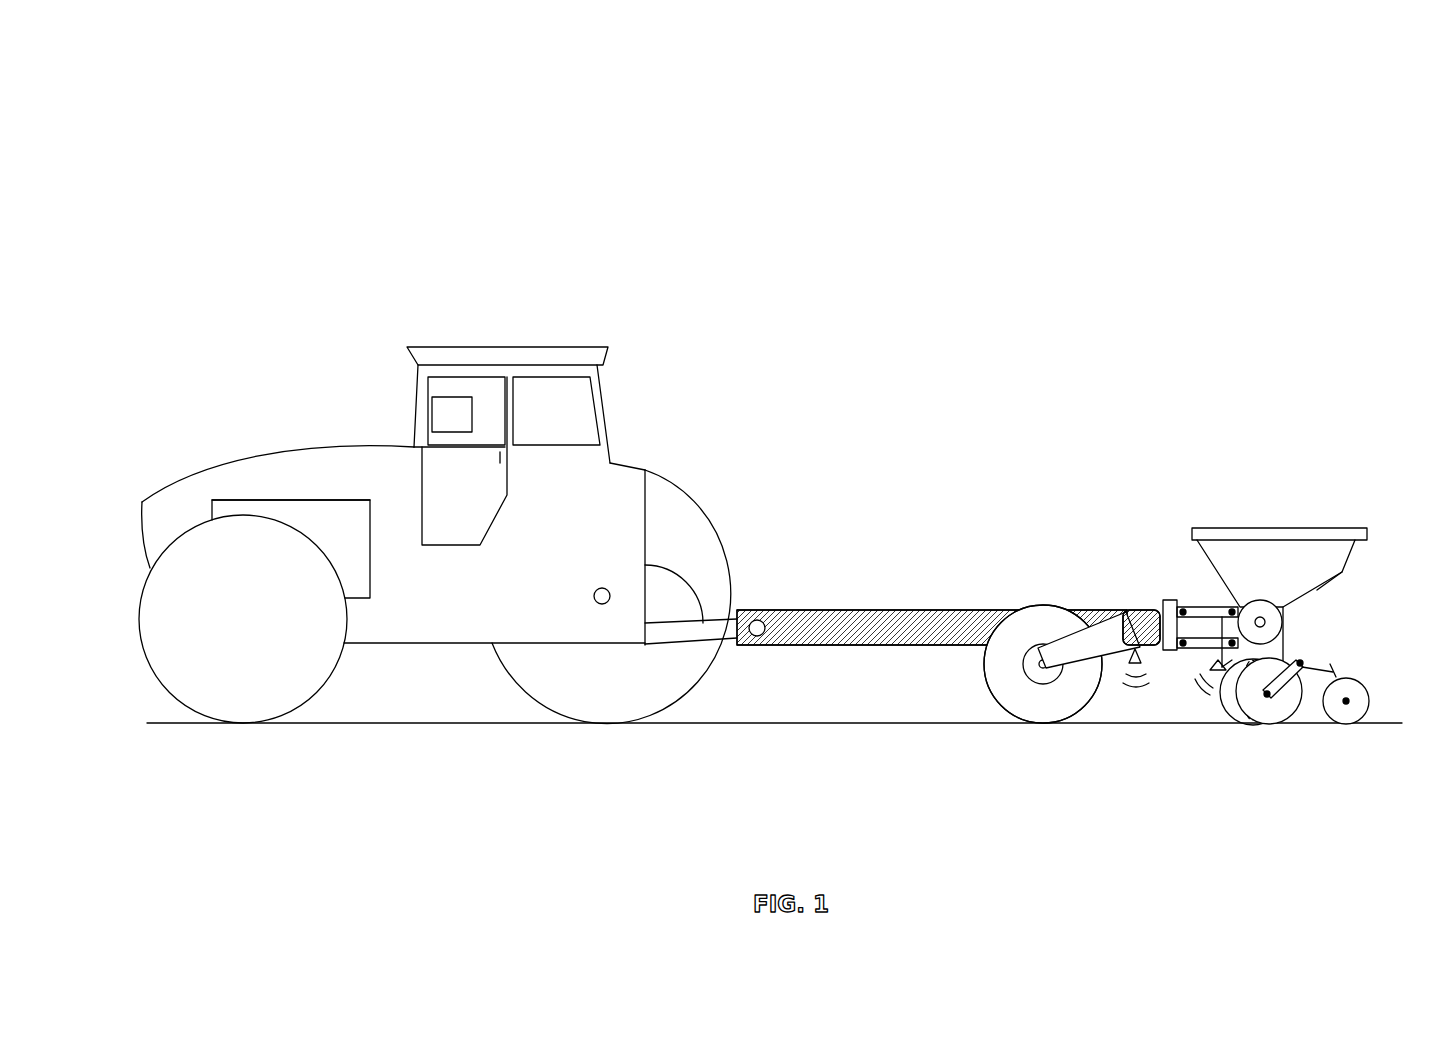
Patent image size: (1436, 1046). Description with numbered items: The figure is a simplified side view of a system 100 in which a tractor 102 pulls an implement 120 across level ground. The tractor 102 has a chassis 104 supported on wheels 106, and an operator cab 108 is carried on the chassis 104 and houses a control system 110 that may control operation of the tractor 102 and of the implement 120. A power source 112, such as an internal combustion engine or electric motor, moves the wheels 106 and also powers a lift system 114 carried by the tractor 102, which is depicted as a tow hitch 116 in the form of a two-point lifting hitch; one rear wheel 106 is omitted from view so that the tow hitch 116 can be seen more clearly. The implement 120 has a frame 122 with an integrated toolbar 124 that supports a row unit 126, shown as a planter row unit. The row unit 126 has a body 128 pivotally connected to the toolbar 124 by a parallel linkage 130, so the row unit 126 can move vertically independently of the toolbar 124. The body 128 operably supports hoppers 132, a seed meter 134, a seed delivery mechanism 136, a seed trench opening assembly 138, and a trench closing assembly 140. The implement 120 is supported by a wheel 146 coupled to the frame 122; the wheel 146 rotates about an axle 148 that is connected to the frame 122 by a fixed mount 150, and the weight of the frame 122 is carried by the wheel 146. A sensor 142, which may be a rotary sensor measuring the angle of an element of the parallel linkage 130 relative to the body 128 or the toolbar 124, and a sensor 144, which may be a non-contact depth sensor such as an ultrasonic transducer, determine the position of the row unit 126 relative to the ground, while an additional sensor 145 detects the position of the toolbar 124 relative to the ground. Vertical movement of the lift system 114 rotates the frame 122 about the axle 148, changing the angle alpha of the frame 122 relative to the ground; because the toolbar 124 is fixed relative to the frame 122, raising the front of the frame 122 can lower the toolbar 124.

The system 100 is at (324, 167).
The tractor 102 is at (281, 428).
The chassis 104 is at (407, 617).
The wheels 106 is at (287, 717).
The operator cab 108 is at (549, 392).
The control system 110 is at (428, 416).
The power source 112 is at (238, 533).
The lift system 114 is at (775, 665).
The tow hitch 116 is at (695, 628).
The implement 120 is at (1017, 460).
The frame 122 is at (891, 609).
The toolbar 124 is at (1130, 610).
The row unit 126 is at (1297, 483).
The body 128 is at (1298, 645).
The parallel linkage 130 is at (1183, 607).
The hoppers 132 is at (1342, 572).
The seed meter 134 is at (1282, 620).
The seed delivery mechanism 136 is at (1270, 727).
The seed trench opening assembly 138 is at (1228, 728).
The trench closing assembly 140 is at (1338, 721).
The sensor 142 is at (1224, 600).
The sensor 144 is at (1195, 680).
The additional sensor 145 is at (1097, 622).
The wheel 146 is at (1018, 705).
The axle 148 is at (1042, 640).
The fixed mount 150 is at (1080, 709).
The angle alpha is at (680, 567).